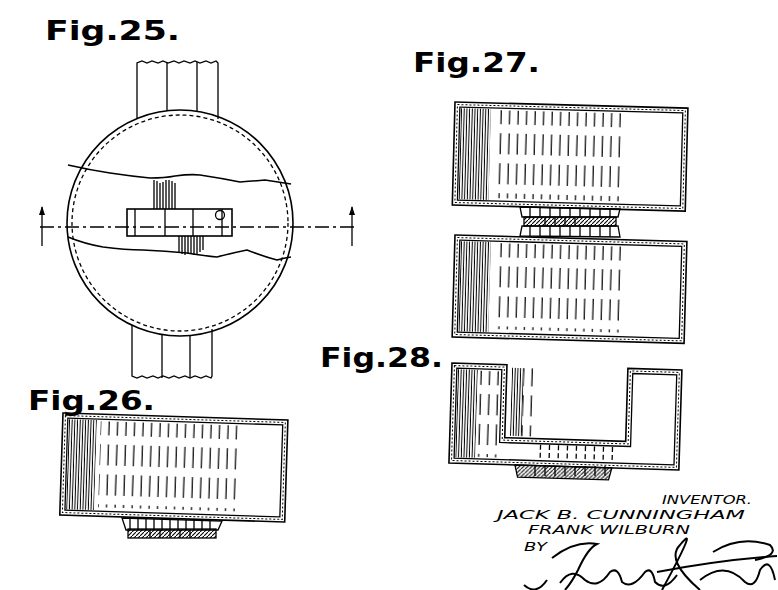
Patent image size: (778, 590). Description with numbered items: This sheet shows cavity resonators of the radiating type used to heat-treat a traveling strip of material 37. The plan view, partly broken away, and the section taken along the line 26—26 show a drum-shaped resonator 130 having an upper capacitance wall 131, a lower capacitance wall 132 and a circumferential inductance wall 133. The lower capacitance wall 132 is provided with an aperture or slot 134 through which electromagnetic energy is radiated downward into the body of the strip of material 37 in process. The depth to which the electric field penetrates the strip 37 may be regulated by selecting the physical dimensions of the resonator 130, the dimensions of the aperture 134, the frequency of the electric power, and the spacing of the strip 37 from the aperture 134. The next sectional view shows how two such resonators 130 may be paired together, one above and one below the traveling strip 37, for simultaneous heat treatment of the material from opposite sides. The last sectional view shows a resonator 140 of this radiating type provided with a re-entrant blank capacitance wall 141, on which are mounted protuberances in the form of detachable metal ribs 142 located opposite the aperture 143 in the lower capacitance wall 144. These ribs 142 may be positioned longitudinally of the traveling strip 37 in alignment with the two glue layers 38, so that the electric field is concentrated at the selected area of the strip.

In FIG. 25, the section line 26 is at (192, 240).
In FIG. 25, the strip of material 37 is at (226, 88).
In FIG. 26, the strip of material 37 is at (145, 541).
In FIG. 27, the strip of material 37 is at (622, 222).
In FIG. 28, the strip of material 37 is at (522, 476).
In FIG. 25, the glue layers 38 is at (190, 352).
In FIG. 26, the glue layers 38 is at (172, 539).
In FIG. 27, the glue layers 38 is at (574, 216).
In FIG. 28, the glue layers 38 is at (540, 468).
In FIG. 25, the drum-shaped resonator 130 is at (282, 166).
In FIG. 26, the drum-shaped resonator 130 is at (292, 414).
In FIG. 27, the drum-shaped resonator 130 is at (590, 104).
In FIG. 25, the upper capacitance wall 131 is at (245, 152).
In FIG. 26, the upper capacitance wall 131 is at (237, 418).
In FIG. 27, the upper capacitance wall 131 is at (568, 335).
In FIG. 25, the lower capacitance wall 132 is at (234, 242).
In FIG. 26, the lower capacitance wall 132 is at (121, 520).
In FIG. 27, the lower capacitance wall 132 is at (514, 206).
In FIG. 25, the circumferential inductance wall 133 is at (295, 228).
In FIG. 26, the circumferential inductance wall 133 is at (292, 466).
In FIG. 27, the circumferential inductance wall 133 is at (690, 170).
In FIG. 25, the aperture 134 is at (232, 217).
In FIG. 26, the aperture 134 is at (205, 517).
In FIG. 27, the aperture 134 is at (610, 206).
In FIG. 28, the resonator 140 is at (449, 436).
In FIG. 28, the re-entrant blank capacitance wall 141 is at (540, 435).
In FIG. 28, the detachable metal ribs 142 is at (569, 440).
In FIG. 28, the aperture 143 is at (612, 466).
In FIG. 28, the lower capacitance wall 144 is at (497, 469).